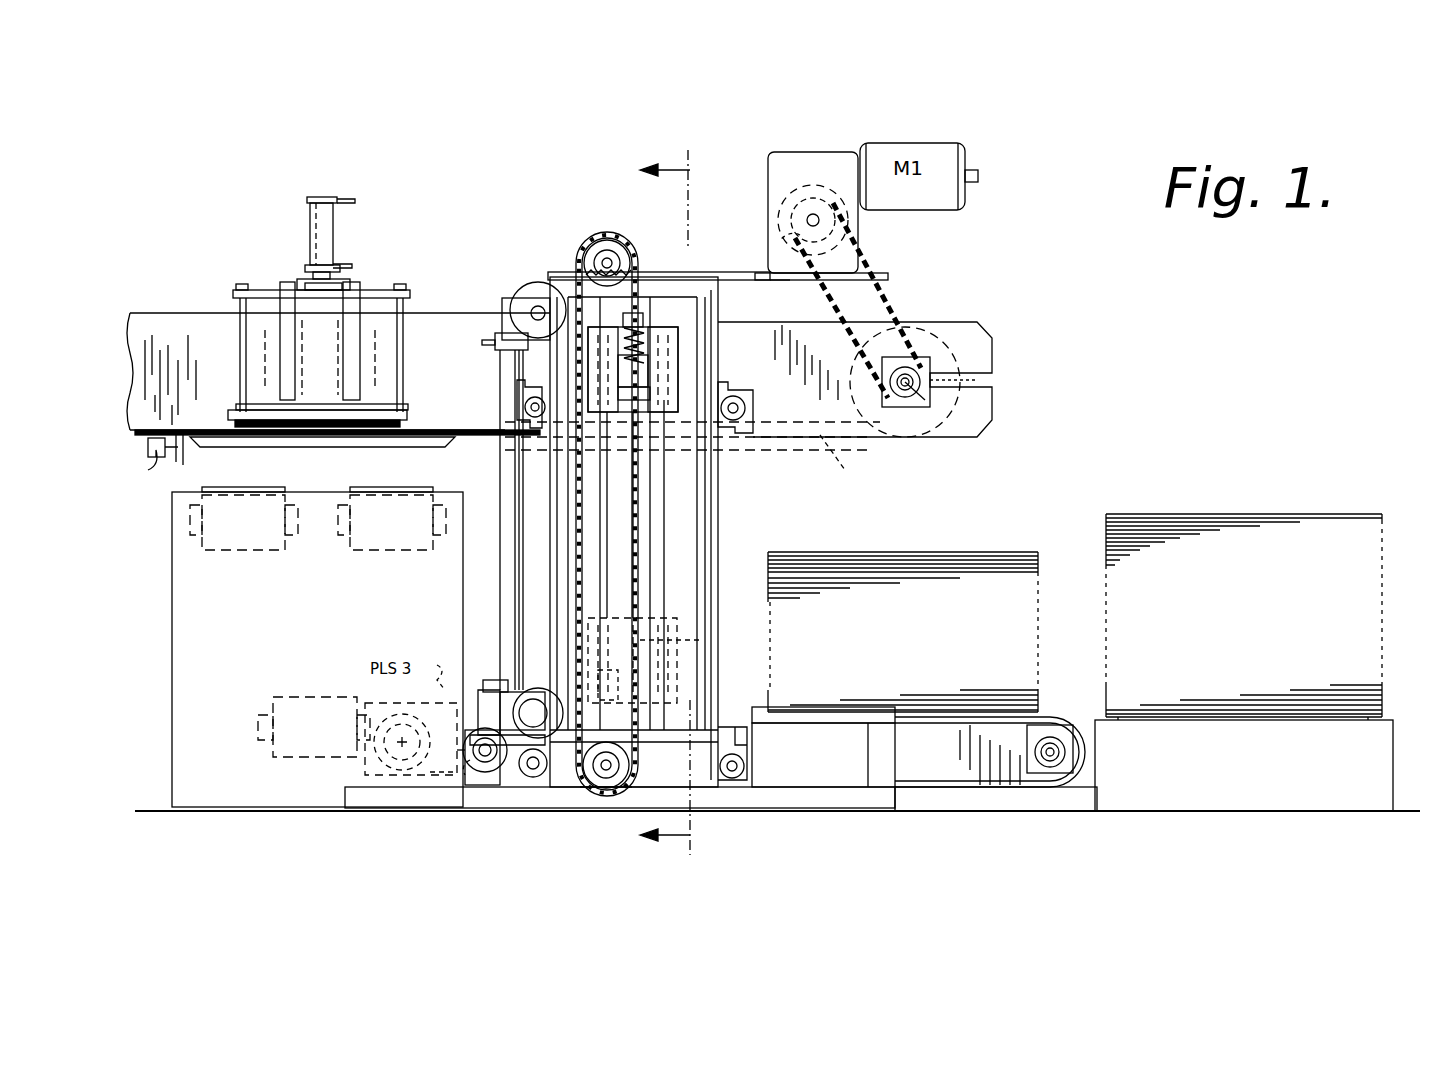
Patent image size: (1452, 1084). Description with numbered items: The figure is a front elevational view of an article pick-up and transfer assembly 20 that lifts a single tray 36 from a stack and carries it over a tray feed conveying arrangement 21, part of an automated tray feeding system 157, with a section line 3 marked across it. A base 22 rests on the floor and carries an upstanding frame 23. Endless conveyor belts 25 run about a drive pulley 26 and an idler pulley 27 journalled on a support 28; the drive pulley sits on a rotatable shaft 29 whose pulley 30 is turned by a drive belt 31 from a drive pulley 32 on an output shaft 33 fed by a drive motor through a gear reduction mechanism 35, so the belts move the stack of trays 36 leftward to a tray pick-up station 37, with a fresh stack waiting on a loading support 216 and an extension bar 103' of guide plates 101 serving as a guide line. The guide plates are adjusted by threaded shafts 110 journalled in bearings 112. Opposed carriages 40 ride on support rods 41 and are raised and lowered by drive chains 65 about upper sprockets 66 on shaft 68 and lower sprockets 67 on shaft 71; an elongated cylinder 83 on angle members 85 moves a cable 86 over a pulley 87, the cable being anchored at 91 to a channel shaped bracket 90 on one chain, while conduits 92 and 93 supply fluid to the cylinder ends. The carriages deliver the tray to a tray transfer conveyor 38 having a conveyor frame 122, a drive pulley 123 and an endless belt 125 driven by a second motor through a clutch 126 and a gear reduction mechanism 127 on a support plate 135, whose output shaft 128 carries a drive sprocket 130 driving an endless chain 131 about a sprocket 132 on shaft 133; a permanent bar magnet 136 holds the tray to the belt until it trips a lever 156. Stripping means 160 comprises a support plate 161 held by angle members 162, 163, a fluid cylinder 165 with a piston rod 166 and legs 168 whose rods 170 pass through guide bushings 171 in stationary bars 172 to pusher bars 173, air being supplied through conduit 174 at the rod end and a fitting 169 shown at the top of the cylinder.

The section line 3- 3 is at (676, 494).
The article pick-up and transfer assembly 20 is at (1035, 272).
The tray feed conveying arrangement 21 is at (372, 485).
The base 22 is at (850, 808).
The upstanding frame 23 is at (720, 540).
The endless conveyor belts 25 is at (1038, 715).
The drive pulley 26 is at (490, 780).
The idler pulley 27 is at (1026, 750).
The support 28 is at (948, 790).
The rotatable shaft 29 is at (457, 753).
The pulley 30 is at (480, 775).
The drive belt 31 is at (455, 775).
The drive pulley 32 is at (365, 775).
The output shaft 33 is at (405, 740).
The gear reduction mechanism 35 is at (360, 693).
The trays 36 is at (1215, 565).
The tray pick-up station 37 is at (680, 642).
The tray transfer conveyor 38 is at (870, 450).
The carriages 40 is at (686, 362).
The support rods 41 is at (735, 455).
The drive chains 65 is at (715, 522).
The upper sprockets 66 is at (607, 255).
The lower sprockets 67 is at (632, 770).
The horizontally extending shaft 68 is at (585, 252).
The horizontally extending shaft 71 is at (606, 780).
The elongated cylinder 83 is at (500, 493).
The angle members 85 is at (520, 300).
The cable 86 is at (520, 363).
The pulley 87 is at (538, 283).
The channel shaped bracket 90 is at (680, 663).
The cable anchorage 91 is at (500, 680).
The conduit 92 is at (490, 333).
The conduit 93 is at (483, 683).
The guide plates 101 is at (700, 500).
The extension bar 103' is at (841, 719).
The shafts 110 is at (524, 407).
The bearings 112 is at (528, 390).
The conveyor frame 122 is at (995, 395).
The drive pulley 123 is at (990, 382).
The endless belt 125 is at (905, 437).
The clutch 126 is at (793, 158).
The gear reduction mechanism 127 is at (880, 274).
The output shaft 128 is at (800, 217).
The drive sprocket 130 is at (795, 246).
The endless chain 131 is at (895, 300).
The sprocket 132 is at (935, 372).
The shaft 133 is at (915, 405).
The support plate 135 is at (880, 290).
The permanent bar magnet 136 is at (845, 470).
The lever 156 is at (185, 455).
The automated tray feeding system 157 is at (160, 640).
The stripping means 160 is at (236, 258).
The support plate 161 is at (350, 281).
The angle member 162 is at (288, 338).
The angle member 163 is at (338, 361).
The fluid cylinder 165 is at (310, 226).
The piston rod 166 is at (310, 250).
The legs 168 is at (233, 293).
The air fitting 169 is at (347, 201).
The rods 170 is at (240, 305).
The guide bushings 171 is at (238, 412).
The stationary bars 172 is at (260, 405).
The pusher bars 173 is at (330, 436).
The conduit 174 is at (355, 266).
The loading support 216 is at (1382, 732).